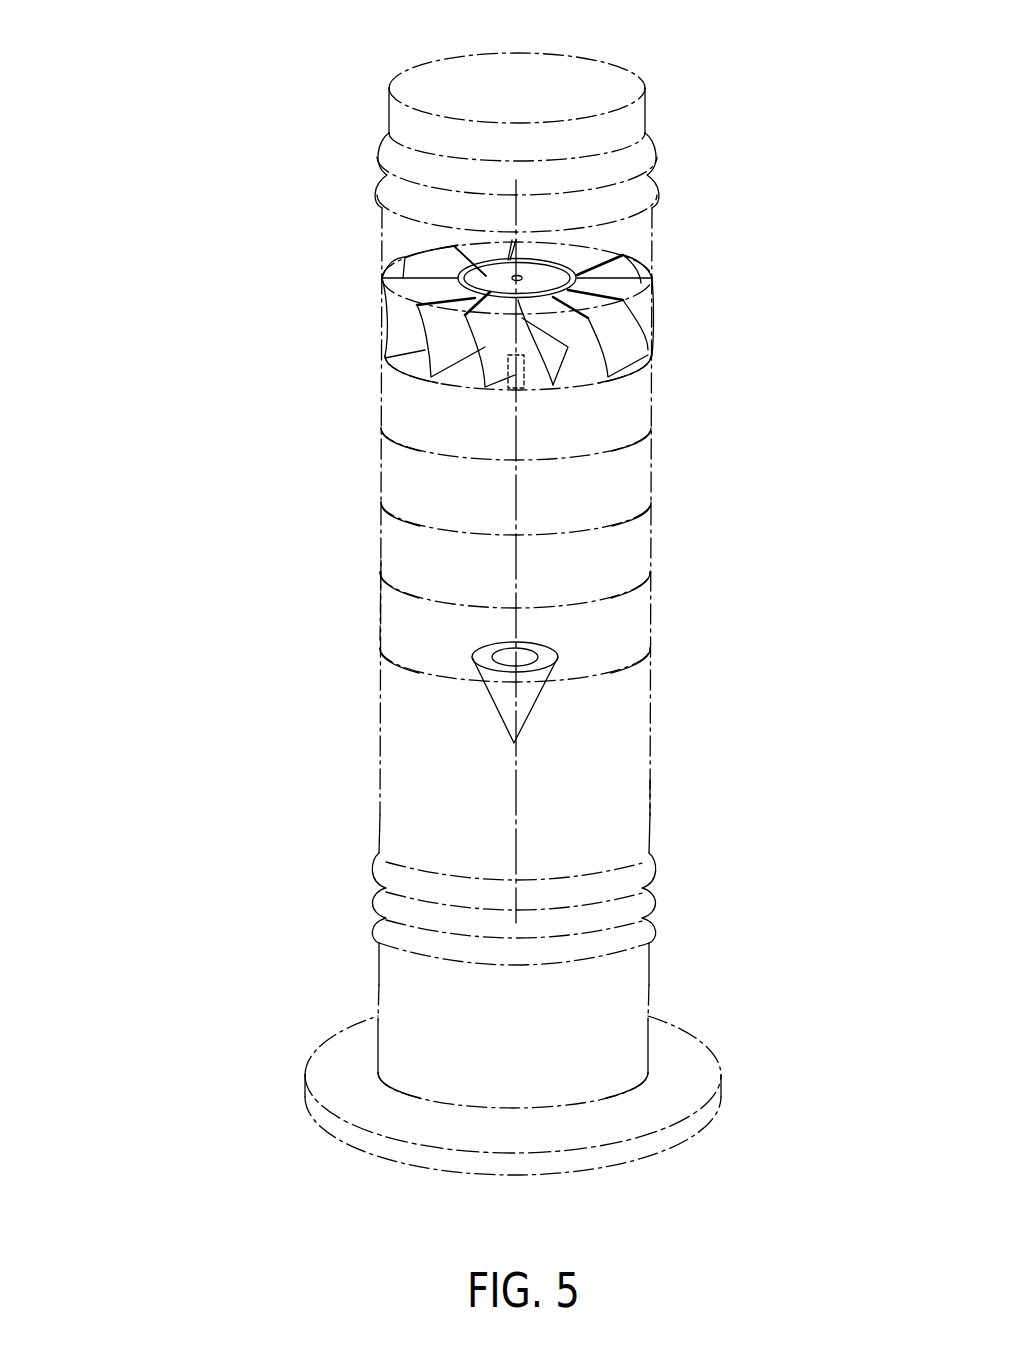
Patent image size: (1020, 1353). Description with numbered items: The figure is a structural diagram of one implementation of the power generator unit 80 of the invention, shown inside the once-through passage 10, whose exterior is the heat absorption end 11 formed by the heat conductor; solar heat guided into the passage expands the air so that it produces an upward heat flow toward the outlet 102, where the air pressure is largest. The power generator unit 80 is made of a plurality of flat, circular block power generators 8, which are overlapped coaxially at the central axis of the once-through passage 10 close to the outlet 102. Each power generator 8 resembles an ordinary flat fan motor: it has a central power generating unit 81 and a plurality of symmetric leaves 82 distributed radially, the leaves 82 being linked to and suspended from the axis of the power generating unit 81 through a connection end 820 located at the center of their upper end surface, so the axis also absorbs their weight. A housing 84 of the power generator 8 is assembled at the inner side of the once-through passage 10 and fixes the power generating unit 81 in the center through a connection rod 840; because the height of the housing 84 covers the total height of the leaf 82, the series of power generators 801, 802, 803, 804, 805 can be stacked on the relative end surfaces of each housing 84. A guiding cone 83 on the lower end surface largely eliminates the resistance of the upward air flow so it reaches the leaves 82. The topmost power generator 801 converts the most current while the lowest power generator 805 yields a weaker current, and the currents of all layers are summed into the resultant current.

The outlet 102 is at (322, 98).
The power generator 8 is at (283, 202).
The power generator unit 80 is at (268, 545).
The housing 84 is at (382, 600).
The topmost power generator 801 is at (655, 313).
The power generator 802 is at (632, 410).
The power generator 803 is at (630, 480).
The power generator 804 is at (632, 552).
The lowest power generator 805 is at (633, 630).
The leaf 82 is at (490, 269).
The connection end 820 is at (470, 258).
The power generating unit 81 is at (540, 284).
The connection rod 840 is at (508, 376).
The guiding cone 83 is at (503, 700).
The once-through passage 10 is at (515, 823).
The heat absorption end 11 is at (650, 810).